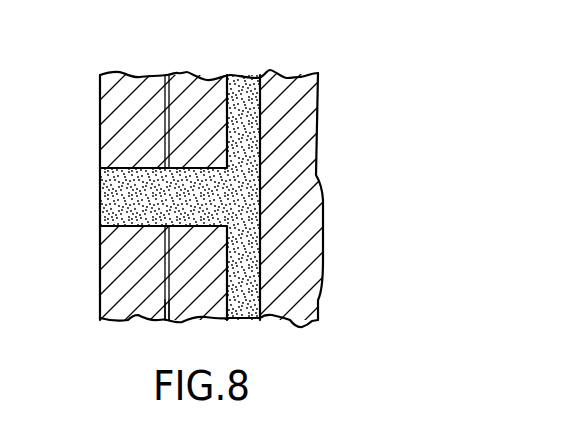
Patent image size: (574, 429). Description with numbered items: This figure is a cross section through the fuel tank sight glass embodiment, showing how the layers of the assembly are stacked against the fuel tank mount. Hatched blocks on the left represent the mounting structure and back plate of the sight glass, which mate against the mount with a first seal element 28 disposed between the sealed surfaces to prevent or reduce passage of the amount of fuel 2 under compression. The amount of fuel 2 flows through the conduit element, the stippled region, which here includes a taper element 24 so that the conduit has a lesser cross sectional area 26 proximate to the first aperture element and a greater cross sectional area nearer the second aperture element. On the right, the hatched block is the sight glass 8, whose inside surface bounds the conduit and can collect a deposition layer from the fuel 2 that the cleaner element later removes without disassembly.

The amount of fuel 2 is at (243, 87).
The sight glass 8 is at (296, 285).
The taper element 24 is at (187, 87).
The lesser cross sectional area 26 is at (230, 203).
The first seal element 28 is at (168, 322).